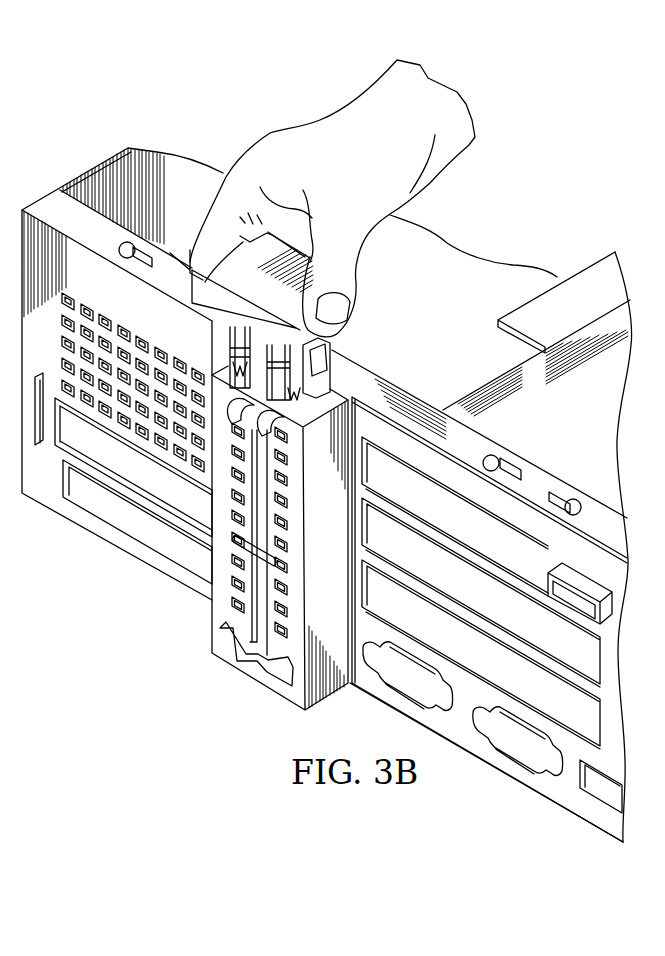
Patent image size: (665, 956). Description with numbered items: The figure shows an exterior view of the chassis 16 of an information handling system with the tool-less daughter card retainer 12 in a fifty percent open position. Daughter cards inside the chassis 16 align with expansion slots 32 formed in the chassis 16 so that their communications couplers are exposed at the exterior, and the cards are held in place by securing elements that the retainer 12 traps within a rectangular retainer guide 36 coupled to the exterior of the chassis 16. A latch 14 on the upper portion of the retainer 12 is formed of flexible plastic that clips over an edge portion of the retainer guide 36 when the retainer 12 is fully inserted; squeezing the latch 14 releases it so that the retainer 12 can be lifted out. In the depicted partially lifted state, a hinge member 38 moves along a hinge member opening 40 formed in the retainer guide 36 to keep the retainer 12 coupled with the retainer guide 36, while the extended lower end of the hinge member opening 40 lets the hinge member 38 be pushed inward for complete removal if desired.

The tool-less daughter card retainer 12 is at (229, 341).
The latch 14 is at (236, 264).
The chassis 16 is at (557, 790).
The expansion slot 32 is at (518, 548).
The retainer guide 36 is at (220, 615).
The hinge member 38 is at (236, 537).
The hinge member opening 40 is at (262, 628).